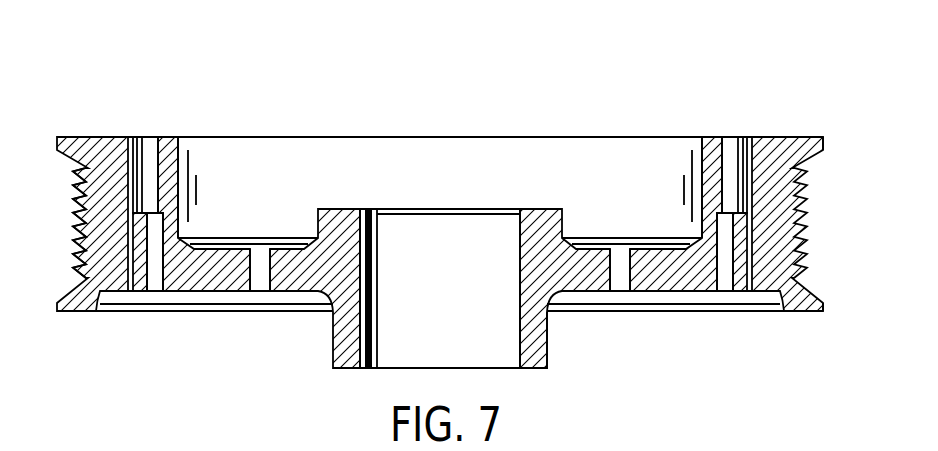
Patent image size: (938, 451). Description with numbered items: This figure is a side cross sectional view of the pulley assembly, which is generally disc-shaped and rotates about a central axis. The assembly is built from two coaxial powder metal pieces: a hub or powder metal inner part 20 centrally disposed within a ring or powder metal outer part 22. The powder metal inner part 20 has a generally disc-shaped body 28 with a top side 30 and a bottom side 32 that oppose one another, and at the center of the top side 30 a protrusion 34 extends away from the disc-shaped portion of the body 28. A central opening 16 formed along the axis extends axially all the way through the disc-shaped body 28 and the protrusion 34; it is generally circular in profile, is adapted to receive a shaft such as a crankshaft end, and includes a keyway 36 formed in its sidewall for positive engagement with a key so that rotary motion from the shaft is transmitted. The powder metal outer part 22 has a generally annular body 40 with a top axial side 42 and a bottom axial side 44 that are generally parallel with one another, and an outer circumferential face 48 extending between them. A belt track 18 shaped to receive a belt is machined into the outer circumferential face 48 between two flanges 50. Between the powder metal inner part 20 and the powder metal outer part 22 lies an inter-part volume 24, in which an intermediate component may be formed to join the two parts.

The central opening 16 is at (466, 241).
The belt track 18 is at (817, 231).
The powder metal inner part 20 is at (236, 163).
The powder metal outer part 22 is at (804, 319).
The inter-part volume 24 is at (149, 157).
The disc-shaped body 28 is at (592, 263).
The top side 30 is at (677, 293).
The bottom side 32 is at (172, 140).
The protrusion 34 is at (536, 345).
The keyway 36 is at (374, 342).
The annular body 40 is at (107, 228).
The top axial side 42 is at (115, 293).
The bottom axial side 44 is at (93, 135).
The outer circumferential face 48 is at (61, 272).
The flanges 50 is at (813, 146).